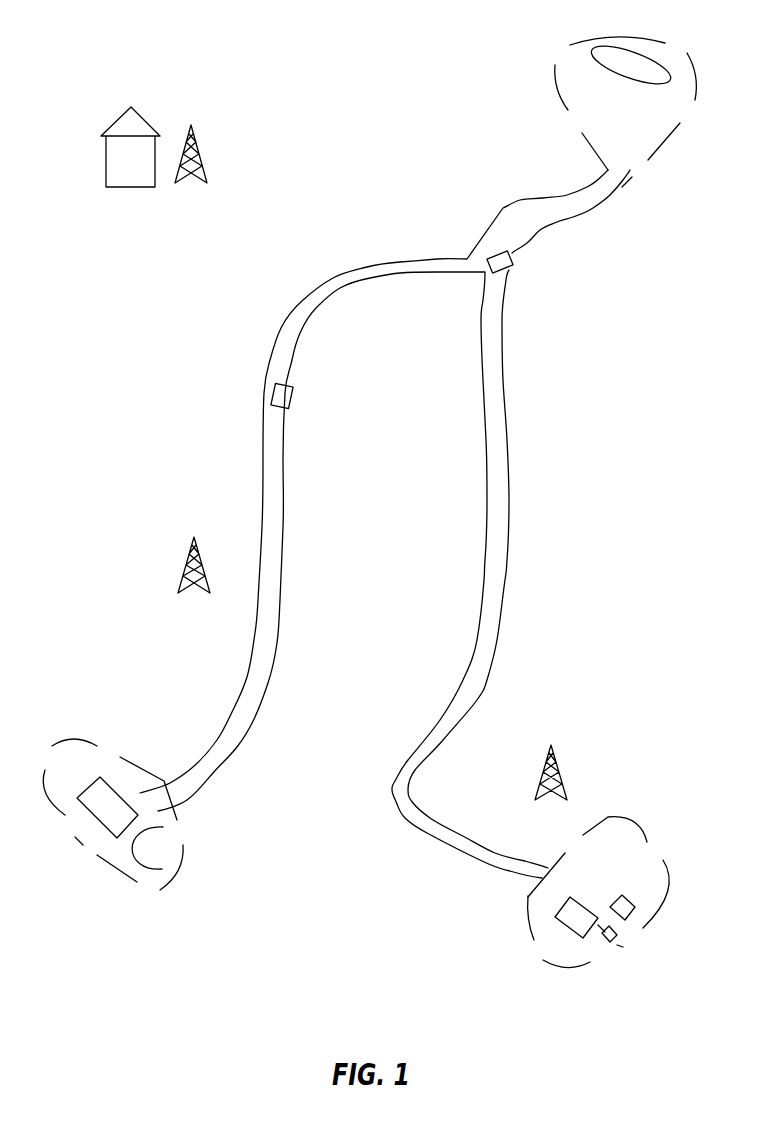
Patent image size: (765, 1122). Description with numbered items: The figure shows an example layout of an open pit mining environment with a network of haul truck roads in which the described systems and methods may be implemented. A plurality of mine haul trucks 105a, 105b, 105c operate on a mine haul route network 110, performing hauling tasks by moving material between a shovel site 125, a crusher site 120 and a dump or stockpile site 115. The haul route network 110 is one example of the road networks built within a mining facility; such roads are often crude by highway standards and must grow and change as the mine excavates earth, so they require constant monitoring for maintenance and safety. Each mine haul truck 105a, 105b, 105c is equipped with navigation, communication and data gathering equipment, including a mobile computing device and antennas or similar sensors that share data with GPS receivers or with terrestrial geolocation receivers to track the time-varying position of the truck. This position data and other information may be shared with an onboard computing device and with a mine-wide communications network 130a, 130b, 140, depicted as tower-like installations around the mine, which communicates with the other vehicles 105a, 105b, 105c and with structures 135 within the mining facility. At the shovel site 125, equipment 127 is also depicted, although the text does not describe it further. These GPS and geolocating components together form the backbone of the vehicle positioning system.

The mine haul truck 105a is at (482, 250).
The mine haul truck 105b is at (267, 393).
The mine haul truck 105c is at (623, 897).
The mine haul route network 110 is at (292, 338).
The dump or stockpile site 115 is at (575, 88).
The crusher site 120 is at (75, 758).
The shovel site 125 is at (557, 915).
The housing 127 is at (540, 927).
The mine-wide communications network 130a is at (557, 767).
The mine-wide communications network 130b is at (187, 560).
The structure 135 is at (148, 120).
The mine-wide communications network 140 is at (200, 157).